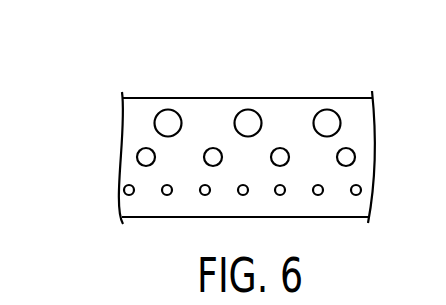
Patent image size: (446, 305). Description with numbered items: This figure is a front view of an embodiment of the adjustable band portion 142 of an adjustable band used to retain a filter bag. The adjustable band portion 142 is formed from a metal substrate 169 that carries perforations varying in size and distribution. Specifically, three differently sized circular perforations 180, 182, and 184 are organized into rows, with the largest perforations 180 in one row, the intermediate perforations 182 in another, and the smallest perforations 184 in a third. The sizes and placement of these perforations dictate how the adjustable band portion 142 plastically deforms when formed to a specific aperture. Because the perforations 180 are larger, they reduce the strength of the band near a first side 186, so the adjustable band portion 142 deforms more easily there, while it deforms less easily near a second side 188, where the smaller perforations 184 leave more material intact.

The adjustable band portion 142 is at (101, 193).
The metal substrate 169 is at (288, 110).
The perforations 180 is at (168, 124).
The perforations 182 is at (146, 156).
The perforations 184 is at (167, 191).
The first side 186 is at (247, 98).
The second side 188 is at (332, 217).